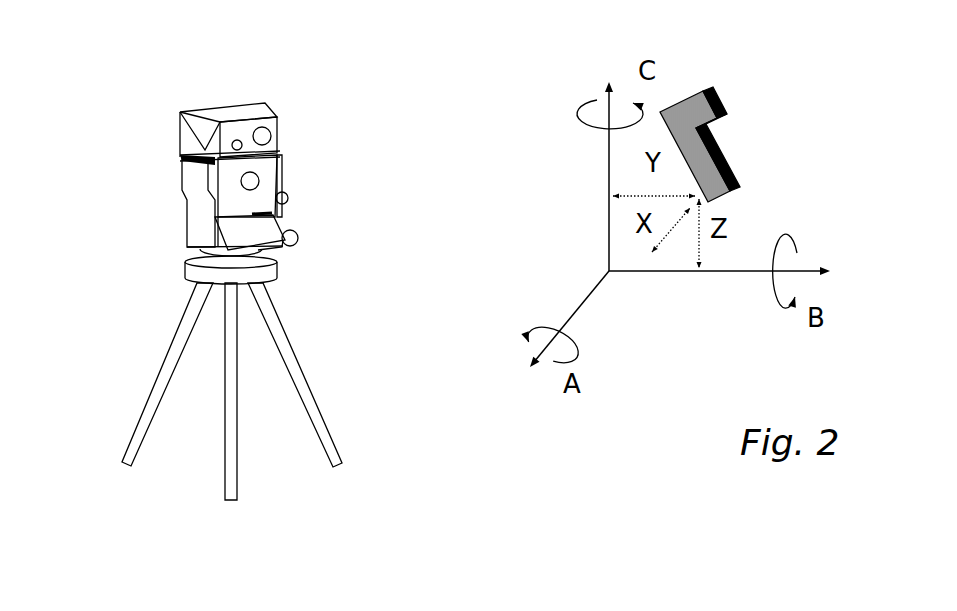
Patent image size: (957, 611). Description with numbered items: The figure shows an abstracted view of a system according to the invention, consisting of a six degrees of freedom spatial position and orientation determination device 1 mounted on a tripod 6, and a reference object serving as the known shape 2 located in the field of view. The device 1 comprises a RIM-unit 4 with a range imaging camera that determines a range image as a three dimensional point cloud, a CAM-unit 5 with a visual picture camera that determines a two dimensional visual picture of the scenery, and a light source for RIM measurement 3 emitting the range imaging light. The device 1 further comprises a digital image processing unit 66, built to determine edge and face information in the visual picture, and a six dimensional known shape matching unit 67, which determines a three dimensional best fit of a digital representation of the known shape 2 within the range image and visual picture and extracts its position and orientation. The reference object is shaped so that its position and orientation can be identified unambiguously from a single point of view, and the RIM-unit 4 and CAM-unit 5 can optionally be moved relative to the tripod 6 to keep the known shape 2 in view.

The six degrees of freedom spatial position and orientation determination device 1 is at (221, 189).
The known shape 2 is at (742, 128).
The light source for RIM measurement 3 is at (309, 109).
The RIM-unit 4 is at (156, 188).
The CAM-unit 5 is at (178, 219).
The tripod 6 is at (220, 378).
The digital image processing unit 66 is at (183, 264).
The six dimensional known shape matching unit 67 is at (316, 203).